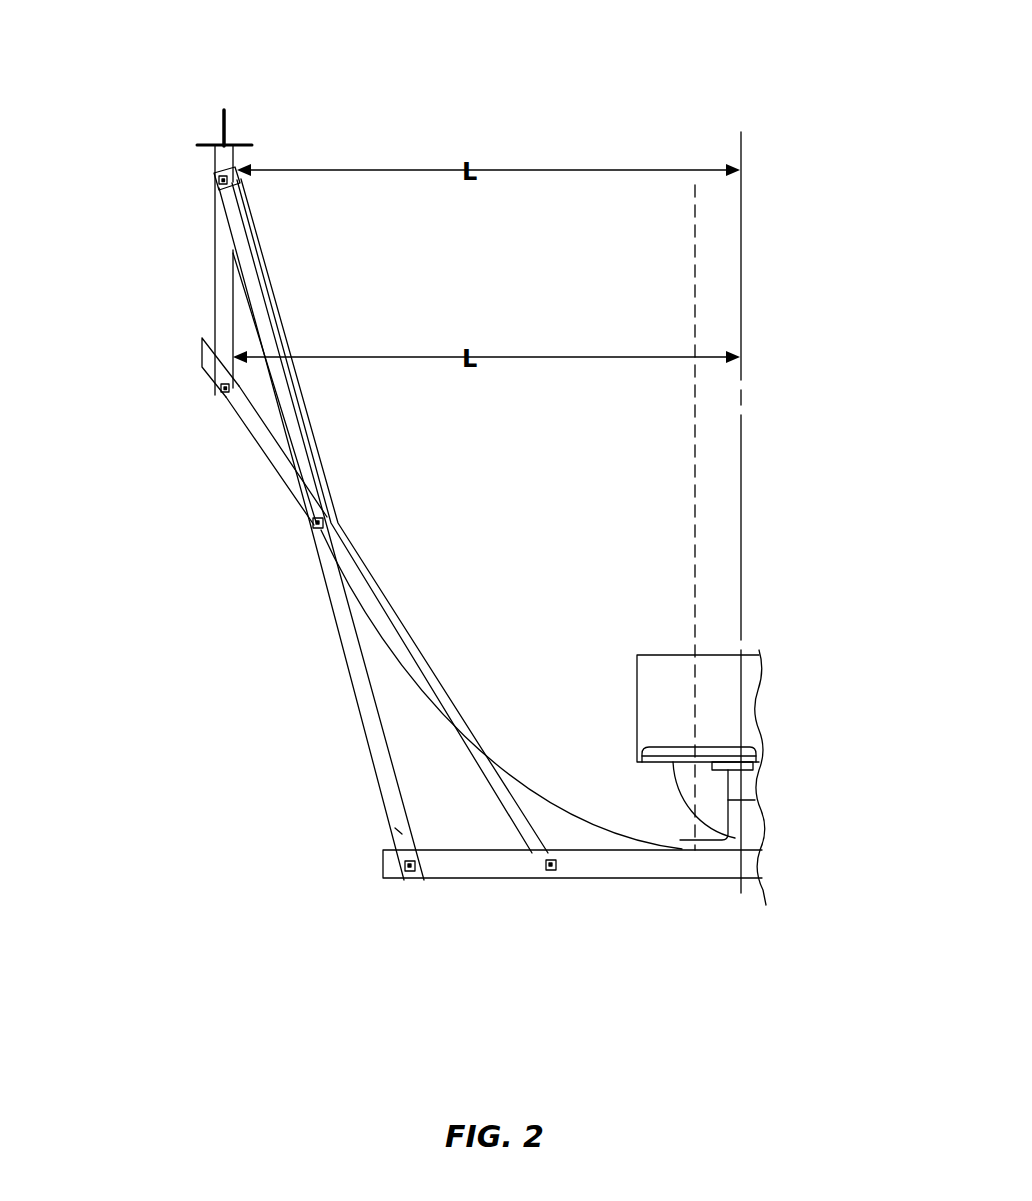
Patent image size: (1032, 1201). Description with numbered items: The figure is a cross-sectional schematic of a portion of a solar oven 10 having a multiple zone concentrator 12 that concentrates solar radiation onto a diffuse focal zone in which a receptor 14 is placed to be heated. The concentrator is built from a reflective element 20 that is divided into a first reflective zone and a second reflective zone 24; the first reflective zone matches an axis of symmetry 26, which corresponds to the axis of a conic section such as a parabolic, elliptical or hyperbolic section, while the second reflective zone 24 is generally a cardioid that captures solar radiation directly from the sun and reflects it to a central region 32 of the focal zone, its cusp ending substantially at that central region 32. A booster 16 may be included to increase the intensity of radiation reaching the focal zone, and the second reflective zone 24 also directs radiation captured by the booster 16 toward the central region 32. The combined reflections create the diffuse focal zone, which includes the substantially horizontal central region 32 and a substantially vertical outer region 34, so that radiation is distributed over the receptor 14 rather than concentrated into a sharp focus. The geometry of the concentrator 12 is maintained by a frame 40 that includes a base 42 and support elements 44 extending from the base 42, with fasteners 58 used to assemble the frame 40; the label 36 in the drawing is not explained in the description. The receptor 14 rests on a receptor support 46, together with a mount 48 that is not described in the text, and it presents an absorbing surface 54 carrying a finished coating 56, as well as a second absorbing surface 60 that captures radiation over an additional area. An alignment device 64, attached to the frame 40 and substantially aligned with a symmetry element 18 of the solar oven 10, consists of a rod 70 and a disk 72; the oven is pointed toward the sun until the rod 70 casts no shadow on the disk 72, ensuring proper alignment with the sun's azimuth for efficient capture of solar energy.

The solar oven 10 is at (169, 722).
The multiple zone concentrator 12 is at (836, 840).
The receptor 14 is at (731, 720).
The booster 16 is at (836, 165).
The symmetry element 18 is at (741, 315).
The reflective element 20 is at (405, 608).
The second reflective zone 24 is at (597, 848).
The axis of symmetry 26 is at (692, 264).
The central region 32 is at (690, 747).
The outer region 34 is at (634, 658).
The strut 36 is at (437, 656).
The frame 40 is at (374, 773).
The base 42 is at (768, 905).
The support elements 44 is at (493, 784).
The receptor support 46 is at (753, 832).
The mounting plate 48 is at (750, 768).
The absorbing surface 54 is at (757, 805).
The finished coating 56 is at (657, 766).
The fasteners 58 is at (218, 187).
The second absorbing surface 60 is at (644, 655).
The alignment device 64 is at (153, 103).
The rod 70 is at (228, 118).
The disk 72 is at (242, 143).